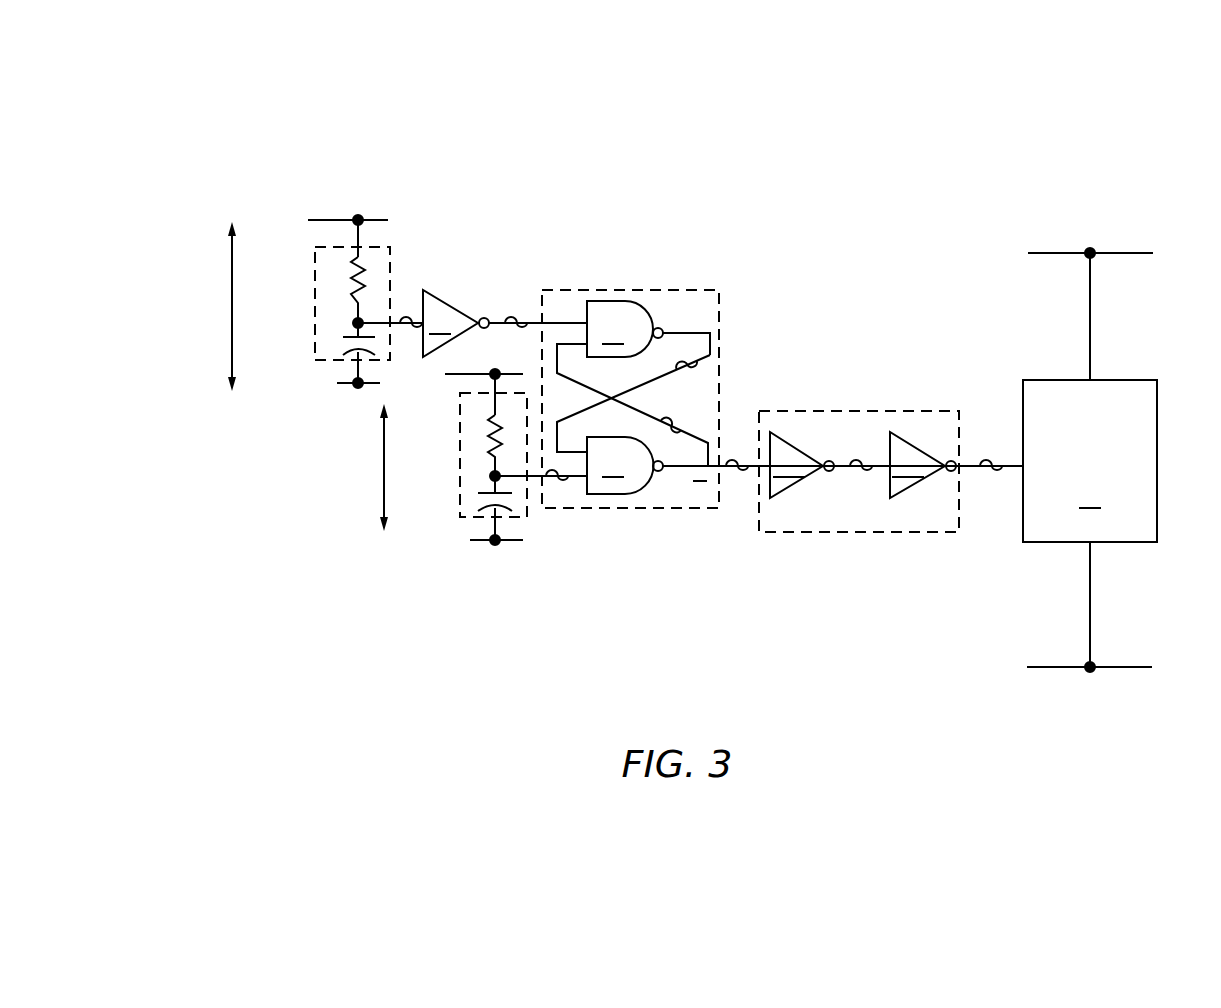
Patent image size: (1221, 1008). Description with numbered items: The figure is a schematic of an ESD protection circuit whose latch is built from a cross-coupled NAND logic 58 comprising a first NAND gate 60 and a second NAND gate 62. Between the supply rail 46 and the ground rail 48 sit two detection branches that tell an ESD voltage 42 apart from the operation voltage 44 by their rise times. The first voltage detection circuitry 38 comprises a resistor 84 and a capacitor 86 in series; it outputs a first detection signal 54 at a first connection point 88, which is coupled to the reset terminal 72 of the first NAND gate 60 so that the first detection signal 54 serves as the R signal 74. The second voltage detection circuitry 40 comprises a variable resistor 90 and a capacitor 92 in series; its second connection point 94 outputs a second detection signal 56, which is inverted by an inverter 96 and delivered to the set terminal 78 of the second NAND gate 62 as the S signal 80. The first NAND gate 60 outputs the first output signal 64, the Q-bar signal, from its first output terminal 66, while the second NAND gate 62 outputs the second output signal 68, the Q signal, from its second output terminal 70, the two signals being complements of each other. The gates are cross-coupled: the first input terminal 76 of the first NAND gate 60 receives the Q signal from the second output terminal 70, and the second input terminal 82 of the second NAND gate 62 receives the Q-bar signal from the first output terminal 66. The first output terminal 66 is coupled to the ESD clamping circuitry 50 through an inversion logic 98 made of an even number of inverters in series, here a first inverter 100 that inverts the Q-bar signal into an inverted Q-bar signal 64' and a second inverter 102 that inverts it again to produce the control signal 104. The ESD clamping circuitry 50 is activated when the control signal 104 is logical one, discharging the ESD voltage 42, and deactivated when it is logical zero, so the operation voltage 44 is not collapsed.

The first voltage detection circuitry 38 is at (460, 458).
The second voltage detection circuitry 40 is at (313, 287).
The ESD voltage 42 is at (383, 462).
The operation voltage 44 is at (231, 293).
The supply rail 46 is at (373, 220).
The ground rail 48 is at (340, 384).
The ESD clamping circuitry 50 is at (1090, 461).
The first detection signal 54 is at (556, 485).
The second detection signal 56 is at (405, 316).
The cross-coupled NAND logic 58 is at (721, 302).
The first NAND gate 60 is at (625, 465).
The second NAND gate 62 is at (625, 329).
The first output signal 64 is at (841, 453).
The inverted Q-bar signal 64' is at (857, 488).
The first output terminal 66 is at (677, 472).
The second output signal 68 is at (697, 372).
The second output terminal 70 is at (676, 332).
The reset terminal 72 is at (578, 482).
The R signal 74 is at (563, 484).
The first input terminal 76 is at (558, 432).
The set terminal 78 is at (556, 322).
The S signal 80 is at (512, 316).
The second input terminal 82 is at (557, 366).
The resistor 84 is at (487, 432).
The capacitor 86 is at (480, 501).
The first connection point 88 is at (477, 476).
The variable resistor 90 is at (348, 279).
The capacitor 92 is at (338, 348).
The second connection point 94 is at (340, 323).
The inverter 96 is at (456, 323).
The inversion logic 98 is at (840, 411).
The first inverter 100 is at (802, 465).
The second inverter 102 is at (923, 465).
The control signal 104 is at (986, 460).